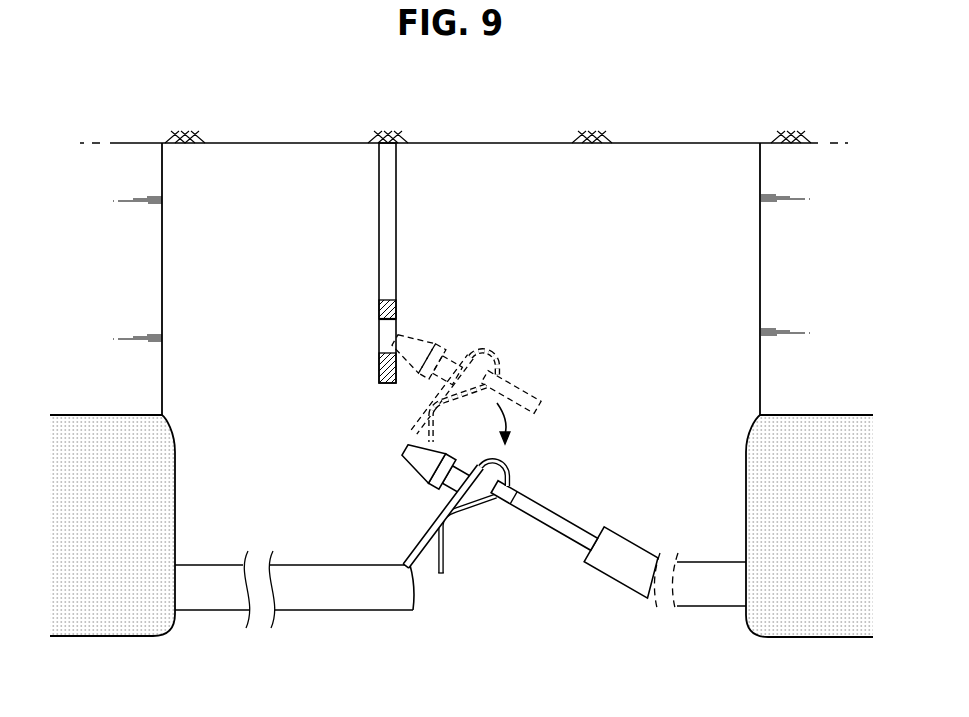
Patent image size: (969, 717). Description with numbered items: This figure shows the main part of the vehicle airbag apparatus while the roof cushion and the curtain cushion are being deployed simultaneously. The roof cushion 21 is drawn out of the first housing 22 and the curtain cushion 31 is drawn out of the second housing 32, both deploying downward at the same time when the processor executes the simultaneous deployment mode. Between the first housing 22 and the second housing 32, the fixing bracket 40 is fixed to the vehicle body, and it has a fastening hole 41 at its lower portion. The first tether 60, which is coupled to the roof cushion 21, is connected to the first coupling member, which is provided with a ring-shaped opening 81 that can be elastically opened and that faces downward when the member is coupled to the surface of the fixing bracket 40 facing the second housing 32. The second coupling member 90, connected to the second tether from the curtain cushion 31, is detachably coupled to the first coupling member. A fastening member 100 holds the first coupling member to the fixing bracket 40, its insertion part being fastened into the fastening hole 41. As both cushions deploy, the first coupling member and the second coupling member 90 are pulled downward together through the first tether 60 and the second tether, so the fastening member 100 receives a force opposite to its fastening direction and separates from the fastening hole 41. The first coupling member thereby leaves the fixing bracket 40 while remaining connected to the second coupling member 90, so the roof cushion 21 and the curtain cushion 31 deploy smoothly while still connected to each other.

The roof cushion 21 is at (175, 498).
The first housing 22 is at (162, 300).
The curtain cushion 31 is at (745, 481).
The second housing 32 is at (760, 300).
The fixing bracket 40 is at (396, 183).
The fastening hole 41 is at (379, 341).
The first tether 60 is at (366, 600).
The ring-shaped opening 81 is at (424, 550).
The second coupling member 90 is at (546, 510).
The fastening member 100 is at (417, 463).